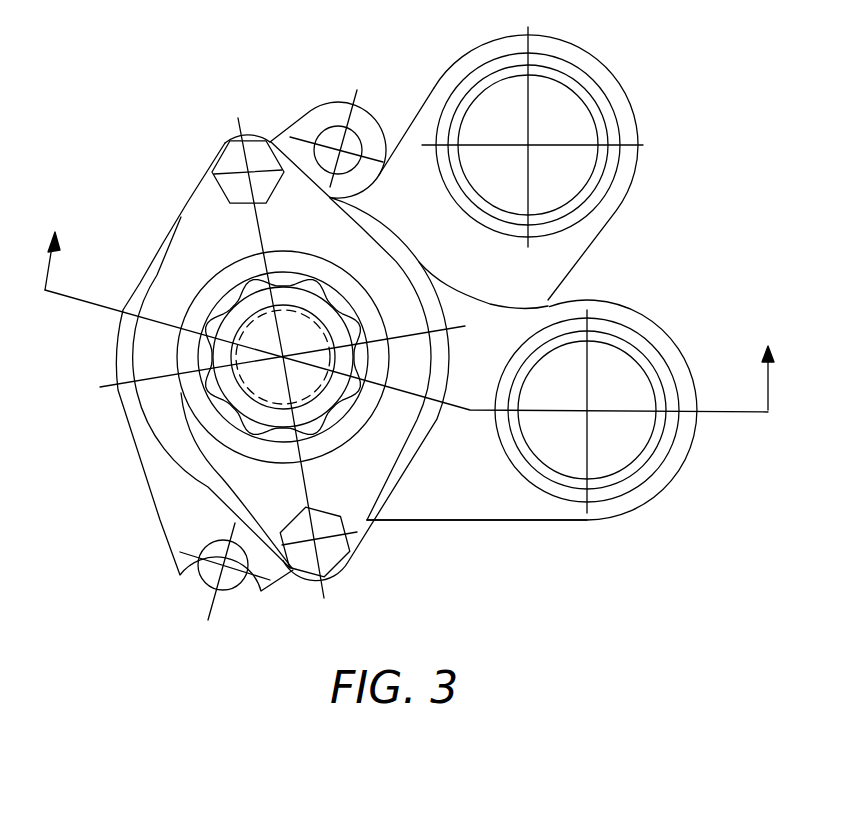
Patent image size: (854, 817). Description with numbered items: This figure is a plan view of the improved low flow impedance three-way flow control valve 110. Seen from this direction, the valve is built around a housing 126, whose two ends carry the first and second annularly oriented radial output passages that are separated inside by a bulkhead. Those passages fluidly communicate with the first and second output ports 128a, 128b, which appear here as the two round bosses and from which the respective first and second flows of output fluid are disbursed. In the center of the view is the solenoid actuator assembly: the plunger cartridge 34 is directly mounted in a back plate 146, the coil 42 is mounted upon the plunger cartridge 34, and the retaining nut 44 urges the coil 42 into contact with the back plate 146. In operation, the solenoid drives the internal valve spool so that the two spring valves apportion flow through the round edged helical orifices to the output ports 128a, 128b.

The three-way flow control valve 110 is at (100, 350).
The back plate 146 is at (190, 203).
The coil 42 is at (187, 410).
The retaining nut 44 is at (215, 415).
The plunger cartridge 34 is at (312, 347).
The first output port 128a is at (585, 128).
The second output port 128b is at (650, 404).
The housing 126 is at (497, 520).